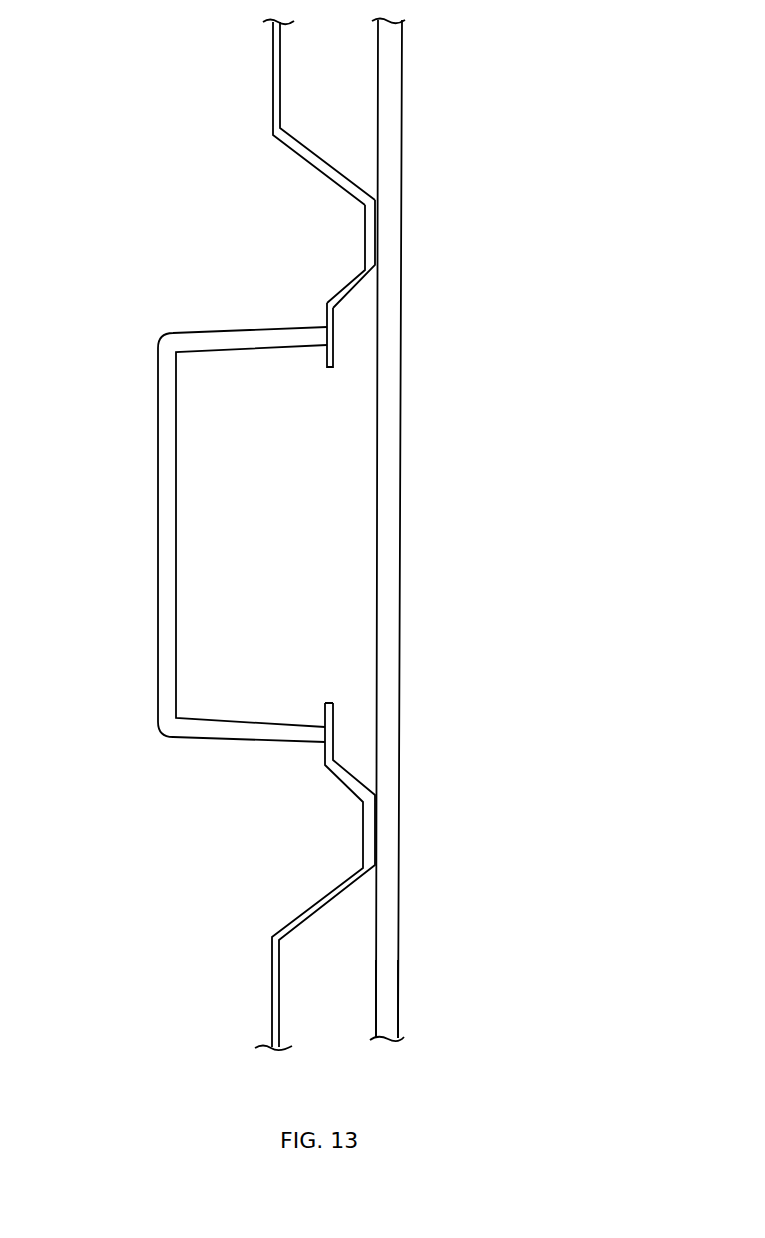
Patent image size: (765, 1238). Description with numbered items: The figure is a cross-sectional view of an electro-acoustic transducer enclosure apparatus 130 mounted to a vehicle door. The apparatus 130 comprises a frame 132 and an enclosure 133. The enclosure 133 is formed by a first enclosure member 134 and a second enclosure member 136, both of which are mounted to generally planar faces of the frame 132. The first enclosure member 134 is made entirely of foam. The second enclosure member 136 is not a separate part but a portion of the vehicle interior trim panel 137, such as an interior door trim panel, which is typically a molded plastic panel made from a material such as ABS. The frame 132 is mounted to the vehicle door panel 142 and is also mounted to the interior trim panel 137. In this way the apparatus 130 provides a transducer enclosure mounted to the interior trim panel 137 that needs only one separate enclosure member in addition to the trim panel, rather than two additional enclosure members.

The electro-acoustic transducer enclosure apparatus 130 is at (176, 276).
The frame 132 is at (358, 287).
The enclosure 133 is at (254, 296).
The first enclosure member 134 is at (166, 401).
The second enclosure member 136 is at (389, 540).
The vehicle interior trim panel 137 is at (383, 968).
The vehicle door panel 142 is at (276, 65).